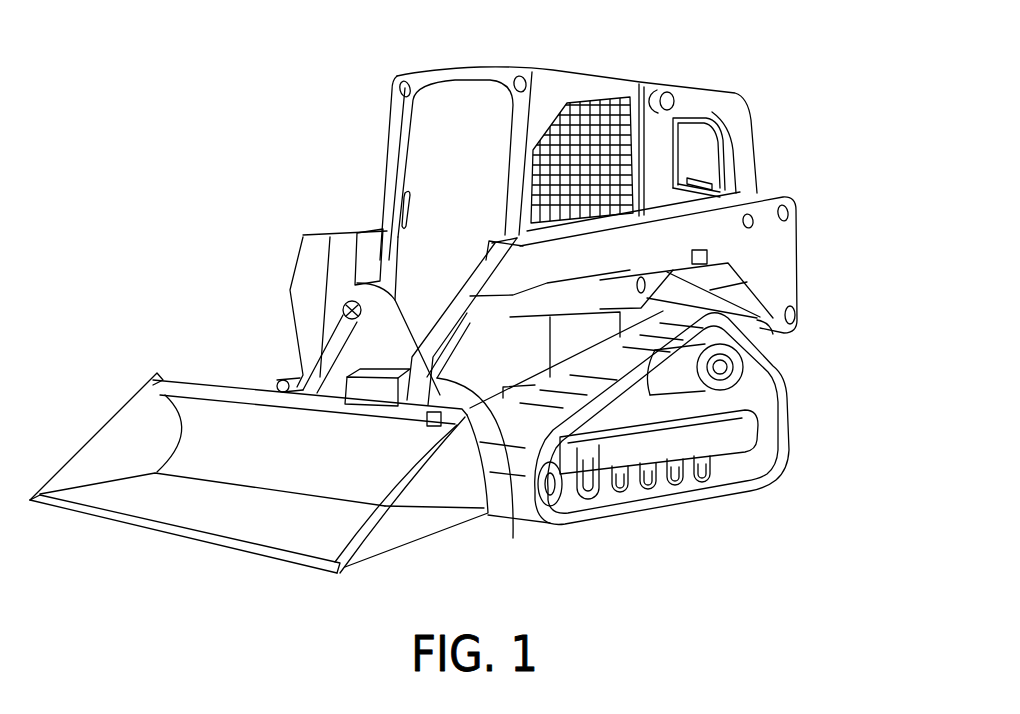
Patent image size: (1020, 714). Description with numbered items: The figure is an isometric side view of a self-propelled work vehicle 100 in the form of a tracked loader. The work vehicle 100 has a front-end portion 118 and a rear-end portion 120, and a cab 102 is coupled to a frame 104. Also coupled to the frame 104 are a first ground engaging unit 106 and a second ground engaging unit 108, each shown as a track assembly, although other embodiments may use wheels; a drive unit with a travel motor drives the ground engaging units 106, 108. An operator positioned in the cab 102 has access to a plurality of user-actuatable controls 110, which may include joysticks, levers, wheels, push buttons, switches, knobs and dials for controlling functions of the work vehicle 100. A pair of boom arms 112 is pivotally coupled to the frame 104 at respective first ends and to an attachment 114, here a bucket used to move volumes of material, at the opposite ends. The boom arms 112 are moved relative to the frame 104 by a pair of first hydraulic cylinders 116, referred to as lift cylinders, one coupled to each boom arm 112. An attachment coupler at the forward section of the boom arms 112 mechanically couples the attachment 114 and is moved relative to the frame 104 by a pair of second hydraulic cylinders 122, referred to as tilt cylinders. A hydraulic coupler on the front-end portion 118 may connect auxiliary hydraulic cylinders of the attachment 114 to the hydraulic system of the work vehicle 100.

The self-propelled work vehicle 100 is at (220, 102).
The cab 102 is at (557, 69).
The frame 104 is at (367, 300).
The first ground engaging unit 106 is at (760, 490).
The second ground engaging unit 108 is at (277, 382).
The user-actuatable controls 110 is at (427, 223).
The boom arms 112 is at (783, 258).
The attachment 114 is at (108, 443).
The first hydraulic cylinders 116 is at (760, 278).
The front-end portion 118 is at (110, 343).
The rear-end portion 120 is at (842, 392).
The second hydraulic cylinders 122 is at (332, 345).